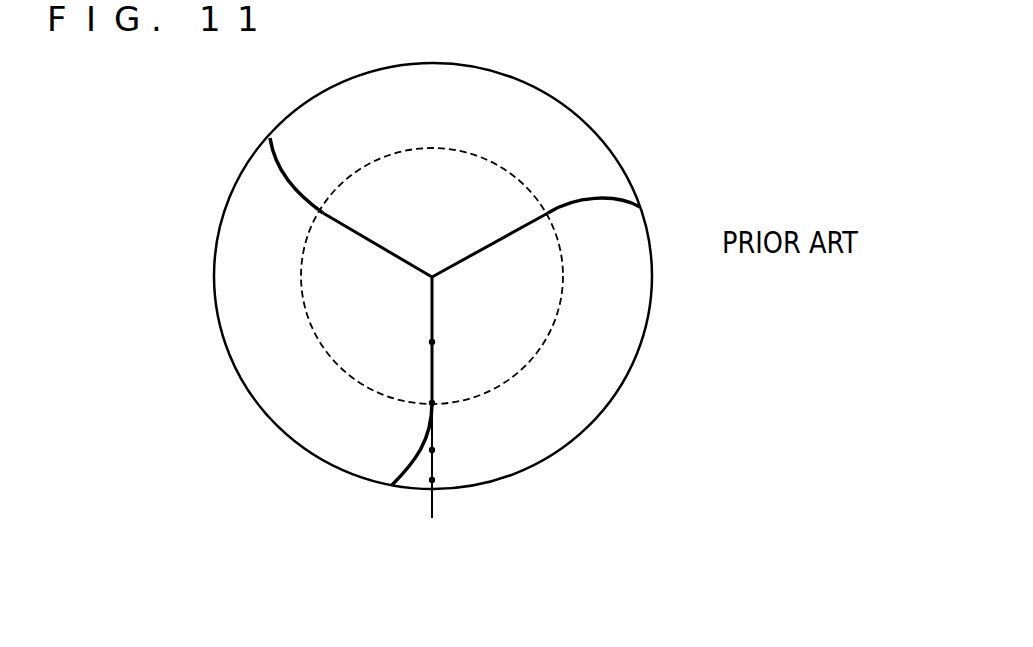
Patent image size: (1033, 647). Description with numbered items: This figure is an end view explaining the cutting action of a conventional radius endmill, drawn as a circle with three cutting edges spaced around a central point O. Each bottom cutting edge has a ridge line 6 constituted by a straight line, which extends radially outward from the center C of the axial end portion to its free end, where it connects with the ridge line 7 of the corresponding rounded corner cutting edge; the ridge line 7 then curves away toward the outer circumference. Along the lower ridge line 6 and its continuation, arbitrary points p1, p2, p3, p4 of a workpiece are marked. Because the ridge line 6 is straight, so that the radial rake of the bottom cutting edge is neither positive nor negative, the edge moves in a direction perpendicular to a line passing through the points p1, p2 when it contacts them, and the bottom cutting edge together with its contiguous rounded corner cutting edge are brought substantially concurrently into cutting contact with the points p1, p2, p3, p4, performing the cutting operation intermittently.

The ridge line of bottom cutting edge 6 is at (385, 243).
The ridge line of rounded corner cutting edge 7 is at (273, 168).
The center C is at (443, 150).
The center O is at (432, 259).
The arbitrary point of workpiece p1 is at (432, 342).
The arbitrary point of workpiece p2 is at (432, 403).
The arbitrary point of workpiece p3 is at (432, 450).
The arbitrary point of workpiece p4 is at (432, 480).